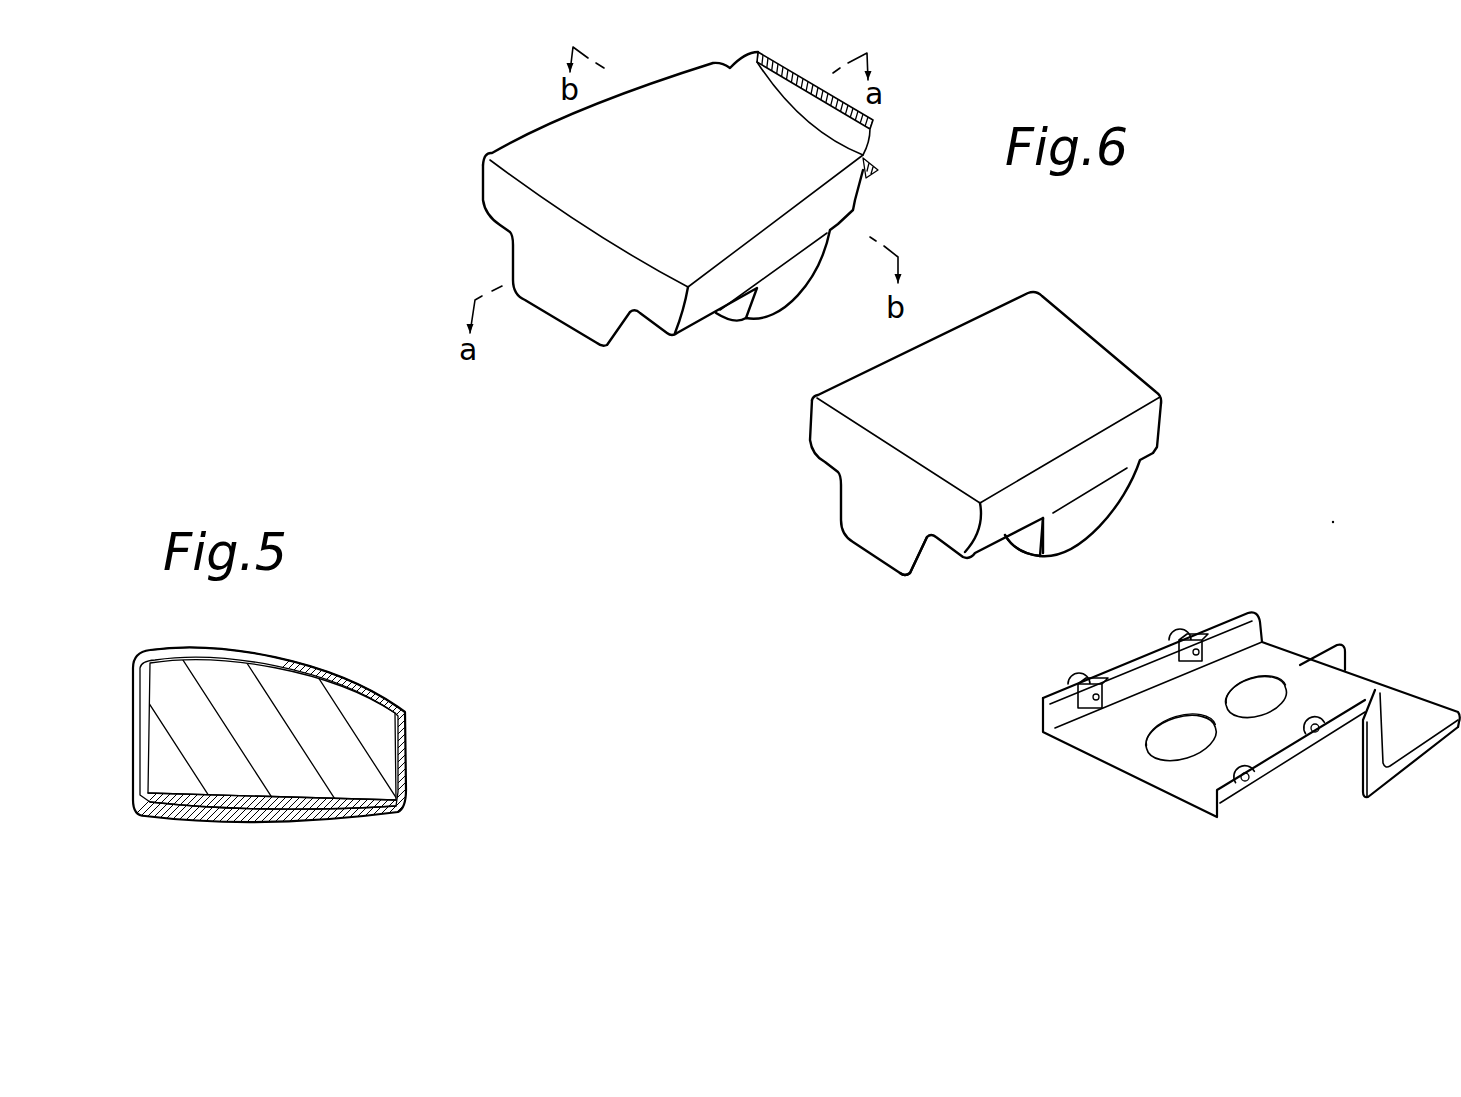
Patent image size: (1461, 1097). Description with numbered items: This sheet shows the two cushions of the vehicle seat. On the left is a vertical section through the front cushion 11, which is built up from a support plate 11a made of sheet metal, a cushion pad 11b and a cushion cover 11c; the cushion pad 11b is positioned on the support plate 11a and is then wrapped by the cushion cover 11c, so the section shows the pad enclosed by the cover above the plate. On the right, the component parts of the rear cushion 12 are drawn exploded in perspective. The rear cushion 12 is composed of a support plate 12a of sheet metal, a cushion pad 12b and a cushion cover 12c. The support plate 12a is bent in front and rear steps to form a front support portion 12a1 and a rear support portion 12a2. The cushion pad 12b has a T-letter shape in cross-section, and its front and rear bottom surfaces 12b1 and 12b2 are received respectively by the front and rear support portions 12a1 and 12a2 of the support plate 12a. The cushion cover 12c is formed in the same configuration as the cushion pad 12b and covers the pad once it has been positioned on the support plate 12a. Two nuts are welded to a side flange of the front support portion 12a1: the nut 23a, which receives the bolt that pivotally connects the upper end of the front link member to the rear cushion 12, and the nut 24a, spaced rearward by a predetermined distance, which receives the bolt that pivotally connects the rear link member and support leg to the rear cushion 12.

In FIG. 5, the front cushion 11 is at (333, 670).
In FIG. 5, the support plate 11a is at (243, 807).
In FIG. 5, the cushion pad 11b is at (343, 787).
In FIG. 5, the cushion cover 11c is at (233, 653).
In FIG. 6, the rear cushion 12 is at (1053, 290).
In FIG. 6, the support plate 12a is at (1250, 607).
In FIG. 6, the front support portion 12a1 is at (1110, 737).
In FIG. 6, the rear support portion 12a2 is at (1400, 712).
In FIG. 6, the cushion pad 12b is at (1098, 358).
In FIG. 6, the front bottom surface 12b1 is at (933, 557).
In FIG. 6, the rear bottom surface 12b2 is at (1013, 550).
In FIG. 6, the cushion cover 12c is at (837, 172).
In FIG. 6, the nut 23a is at (1086, 682).
In FIG. 6, the nut 24a is at (1188, 627).